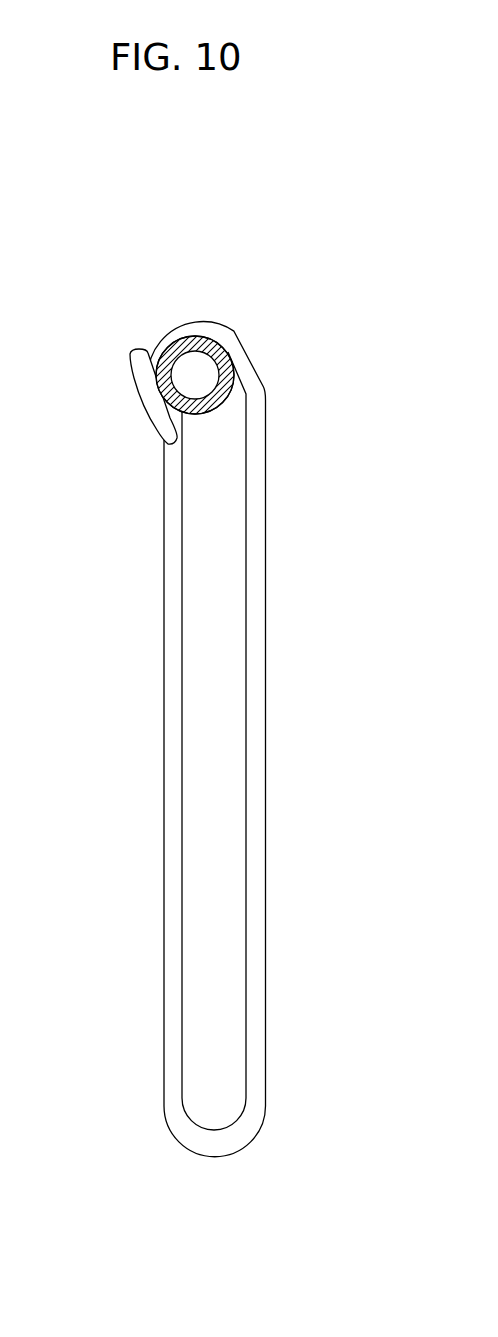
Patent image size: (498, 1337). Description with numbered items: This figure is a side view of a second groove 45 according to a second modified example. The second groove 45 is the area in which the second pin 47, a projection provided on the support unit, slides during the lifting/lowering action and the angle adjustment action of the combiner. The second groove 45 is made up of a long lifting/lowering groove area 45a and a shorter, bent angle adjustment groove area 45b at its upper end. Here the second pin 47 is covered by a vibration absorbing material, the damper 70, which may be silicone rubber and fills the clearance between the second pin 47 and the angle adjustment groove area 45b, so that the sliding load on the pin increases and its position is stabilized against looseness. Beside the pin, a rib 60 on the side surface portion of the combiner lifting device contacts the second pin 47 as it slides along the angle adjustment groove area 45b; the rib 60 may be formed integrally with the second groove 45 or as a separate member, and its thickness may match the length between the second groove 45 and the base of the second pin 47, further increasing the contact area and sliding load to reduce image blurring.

The second groove 45 is at (205, 197).
The lifting/lowering groove area 45a is at (266, 407).
The angle adjustment groove area 45b is at (205, 292).
The second pin 47 is at (168, 345).
The damper 70 is at (195, 373).
The rib 60 is at (141, 391).